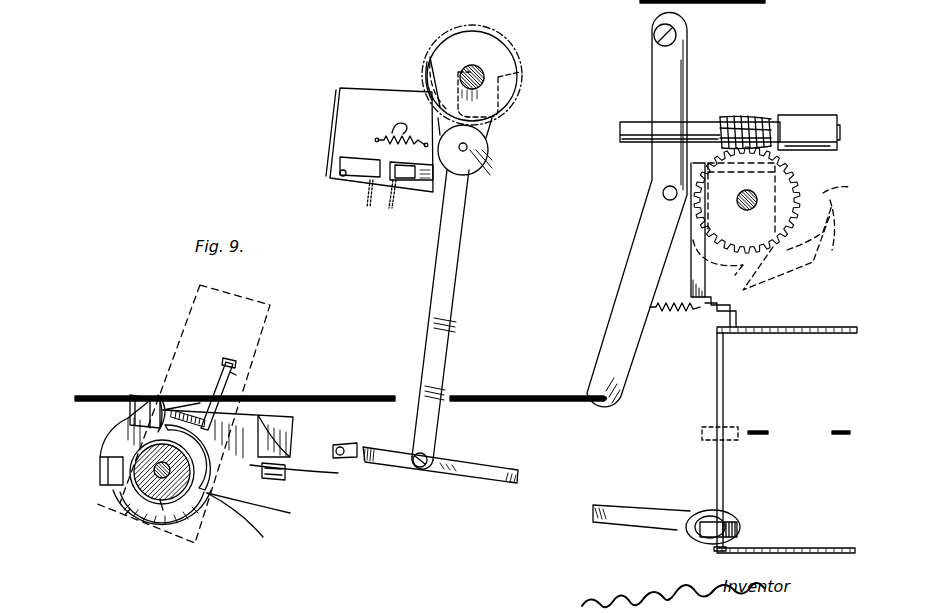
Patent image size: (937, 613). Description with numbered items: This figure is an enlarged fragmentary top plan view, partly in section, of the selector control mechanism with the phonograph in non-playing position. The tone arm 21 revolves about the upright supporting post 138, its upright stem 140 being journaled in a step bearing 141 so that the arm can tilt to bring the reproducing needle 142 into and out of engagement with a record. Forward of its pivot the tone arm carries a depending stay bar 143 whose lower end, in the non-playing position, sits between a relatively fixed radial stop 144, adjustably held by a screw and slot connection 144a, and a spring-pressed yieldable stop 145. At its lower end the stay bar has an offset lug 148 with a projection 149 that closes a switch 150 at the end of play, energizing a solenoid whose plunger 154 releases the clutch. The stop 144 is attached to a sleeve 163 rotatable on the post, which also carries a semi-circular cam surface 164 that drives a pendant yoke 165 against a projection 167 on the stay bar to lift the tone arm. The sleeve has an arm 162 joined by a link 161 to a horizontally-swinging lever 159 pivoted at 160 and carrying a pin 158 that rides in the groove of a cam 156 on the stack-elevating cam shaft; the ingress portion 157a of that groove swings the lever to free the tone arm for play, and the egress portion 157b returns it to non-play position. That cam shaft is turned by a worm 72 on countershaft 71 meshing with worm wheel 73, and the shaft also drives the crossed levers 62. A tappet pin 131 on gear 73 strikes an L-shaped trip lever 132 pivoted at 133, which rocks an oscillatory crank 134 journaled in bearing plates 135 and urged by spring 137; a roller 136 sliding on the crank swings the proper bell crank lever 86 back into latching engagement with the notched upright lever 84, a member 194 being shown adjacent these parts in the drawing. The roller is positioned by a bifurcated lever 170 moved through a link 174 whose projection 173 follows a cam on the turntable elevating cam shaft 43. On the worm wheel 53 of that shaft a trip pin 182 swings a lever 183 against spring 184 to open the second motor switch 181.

The tone arm 21 is at (282, 336).
The cam shaft 43 is at (477, 70).
The worm wheel 53 is at (513, 110).
The crossed levers 62 is at (741, 203).
The countershaft 71 is at (633, 123).
The worm 72 is at (742, 115).
The worm wheel 73 is at (793, 173).
The upright lever 84 is at (840, 438).
The bell crank lever 86 is at (760, 434).
The tappet pin 131 is at (748, 205).
The trip lever 132 is at (695, 240).
The pivot 133 is at (695, 165).
The oscillatory crank 134 is at (720, 312).
The bearing plates 135 is at (827, 333).
The roller 136 is at (740, 528).
The spring 137 is at (670, 312).
The supporting post 138 is at (248, 528).
The upright stem 140 is at (165, 515).
The step bearing 141 is at (700, 508).
The reproducing needle 142 is at (500, 77).
The stay bar 143 is at (182, 408).
The radial stop 144 is at (287, 418).
The screw and slot connection 144a is at (163, 513).
The yieldable stop 145 is at (168, 398).
The offset lug 148 is at (222, 377).
The projection 149 is at (237, 373).
The switch 150 is at (283, 482).
The plunger 154 is at (793, 258).
The cam 156 is at (823, 247).
The ingress portion 157a is at (854, 213).
The egress portion 157b is at (737, 278).
The pin 158 is at (663, 195).
The lever 159 is at (616, 304).
The pivot 160 is at (670, 40).
The link 161 is at (372, 380).
The arm 162 is at (115, 423).
The sleeve 163 is at (200, 513).
The cam surface 164 is at (153, 513).
The pendant yoke 165 is at (266, 512).
The projection 167 is at (378, 470).
The lever 170 is at (505, 466).
The projection 173 is at (488, 160).
The link 174 is at (455, 307).
The second motor switch 181 is at (378, 187).
The trip pin 182 is at (430, 48).
The lever 183 is at (432, 65).
The spring 184 is at (379, 140).
The rod 194 is at (725, 358).